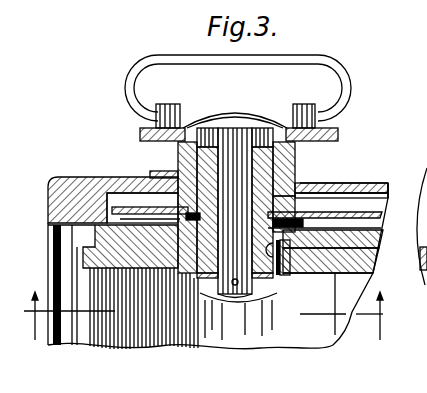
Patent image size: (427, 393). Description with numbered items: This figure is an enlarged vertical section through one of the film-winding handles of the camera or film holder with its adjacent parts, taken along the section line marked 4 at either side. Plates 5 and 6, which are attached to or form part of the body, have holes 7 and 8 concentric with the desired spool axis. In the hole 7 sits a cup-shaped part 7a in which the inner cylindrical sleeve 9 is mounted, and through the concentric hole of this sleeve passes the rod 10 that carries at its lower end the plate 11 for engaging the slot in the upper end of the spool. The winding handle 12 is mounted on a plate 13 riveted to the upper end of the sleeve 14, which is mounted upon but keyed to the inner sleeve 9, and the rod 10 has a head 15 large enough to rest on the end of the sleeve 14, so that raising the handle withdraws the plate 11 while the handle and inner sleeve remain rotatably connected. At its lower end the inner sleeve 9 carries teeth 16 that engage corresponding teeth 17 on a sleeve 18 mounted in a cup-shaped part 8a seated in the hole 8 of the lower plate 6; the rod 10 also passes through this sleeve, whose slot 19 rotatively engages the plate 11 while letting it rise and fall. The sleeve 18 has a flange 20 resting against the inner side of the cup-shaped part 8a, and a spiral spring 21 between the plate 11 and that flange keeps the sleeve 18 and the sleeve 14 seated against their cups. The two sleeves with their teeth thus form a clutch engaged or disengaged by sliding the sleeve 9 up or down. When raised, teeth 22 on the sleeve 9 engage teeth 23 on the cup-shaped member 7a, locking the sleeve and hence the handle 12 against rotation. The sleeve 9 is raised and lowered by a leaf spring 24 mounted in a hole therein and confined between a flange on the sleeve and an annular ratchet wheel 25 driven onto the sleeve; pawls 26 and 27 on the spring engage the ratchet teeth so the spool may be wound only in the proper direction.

The section line 4- 4 is at (201, 316).
The plate 5 is at (373, 184).
The plate 6 is at (362, 262).
The hole 7 is at (302, 188).
The cup-shaped part 7a is at (158, 130).
The hole 8 is at (376, 250).
The cup-shaped part 8a is at (193, 274).
The inner cylindrical sleeve 9 is at (294, 157).
The rod 10 is at (295, 166).
The plate 11 is at (259, 298).
The winding handle 12 is at (346, 79).
The plate 13 is at (338, 128).
The sleeve 14 is at (180, 161).
The head 15 is at (238, 118).
The teeth 16 is at (295, 215).
The teeth 17 is at (165, 209).
The sleeve 18 is at (266, 285).
The slot 19 is at (211, 276).
The flange 20 is at (288, 233).
The spiral spring 21 is at (294, 270).
The teeth 22 is at (136, 217).
The teeth 23 is at (176, 173).
The leaf spring 24 is at (382, 211).
The annular ratchet wheel 25 is at (347, 187).
The pawl 26 is at (105, 182).
The pawl 27 is at (389, 183).